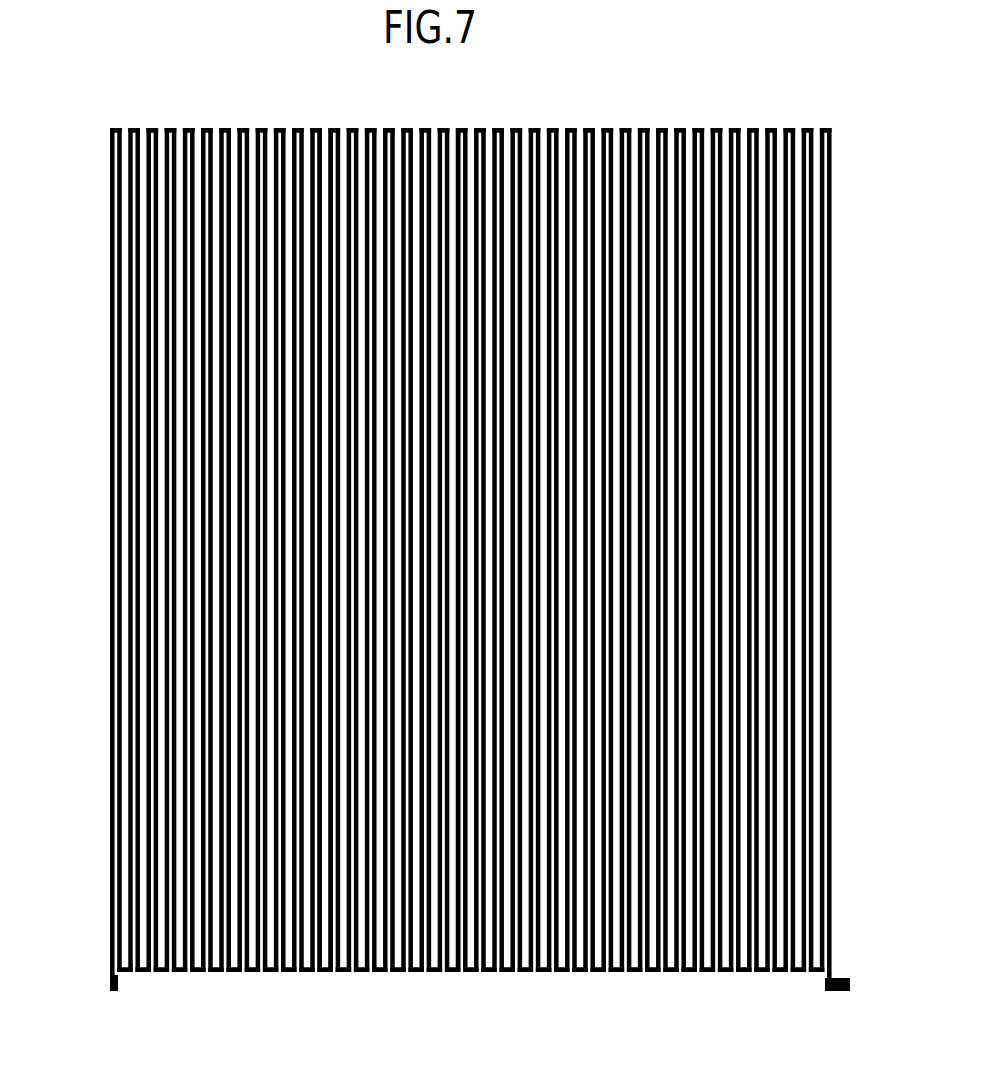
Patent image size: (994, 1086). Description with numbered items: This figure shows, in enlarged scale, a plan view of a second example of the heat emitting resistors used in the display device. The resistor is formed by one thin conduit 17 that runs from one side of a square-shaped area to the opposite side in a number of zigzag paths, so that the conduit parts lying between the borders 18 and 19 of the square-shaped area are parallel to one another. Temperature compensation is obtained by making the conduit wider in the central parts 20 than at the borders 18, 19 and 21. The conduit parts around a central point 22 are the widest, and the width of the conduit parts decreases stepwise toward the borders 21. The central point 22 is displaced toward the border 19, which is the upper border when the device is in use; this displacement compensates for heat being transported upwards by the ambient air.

The thin conduit 17 is at (111, 247).
The border 18 is at (375, 973).
The border 19 is at (563, 128).
The central parts 20 is at (323, 435).
The border 21 is at (826, 432).
The central point 22 is at (455, 322).